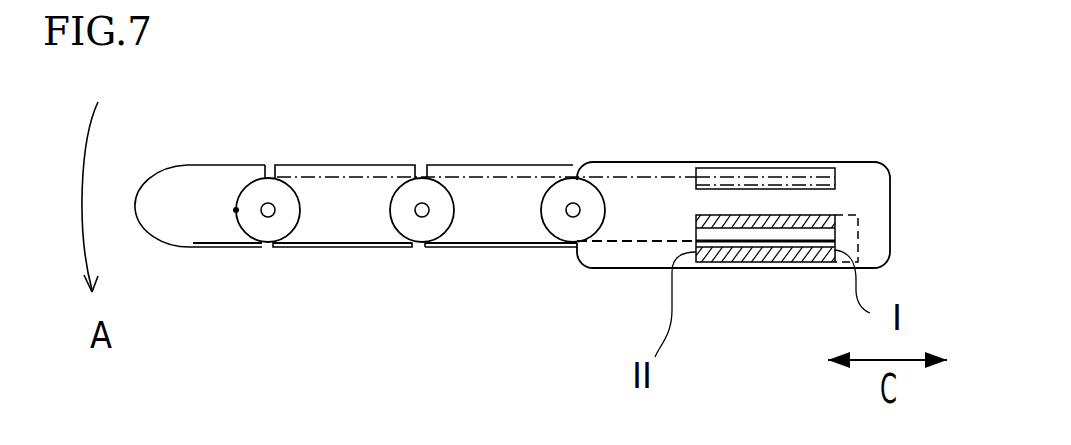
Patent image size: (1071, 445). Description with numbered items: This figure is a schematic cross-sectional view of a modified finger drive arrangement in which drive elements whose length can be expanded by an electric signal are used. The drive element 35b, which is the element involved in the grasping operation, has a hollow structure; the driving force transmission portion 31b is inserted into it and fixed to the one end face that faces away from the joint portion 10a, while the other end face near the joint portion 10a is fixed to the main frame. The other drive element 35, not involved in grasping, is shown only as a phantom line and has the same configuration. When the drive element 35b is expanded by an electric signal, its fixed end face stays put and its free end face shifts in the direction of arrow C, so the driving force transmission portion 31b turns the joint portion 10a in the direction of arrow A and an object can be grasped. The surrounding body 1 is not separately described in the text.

The main body housing 1 is at (816, 168).
The tube member 35 is at (742, 178).
The drive element 35b is at (770, 256).
The joint portion 10a is at (289, 222).
The driving force transmission portion 31b is at (503, 247).